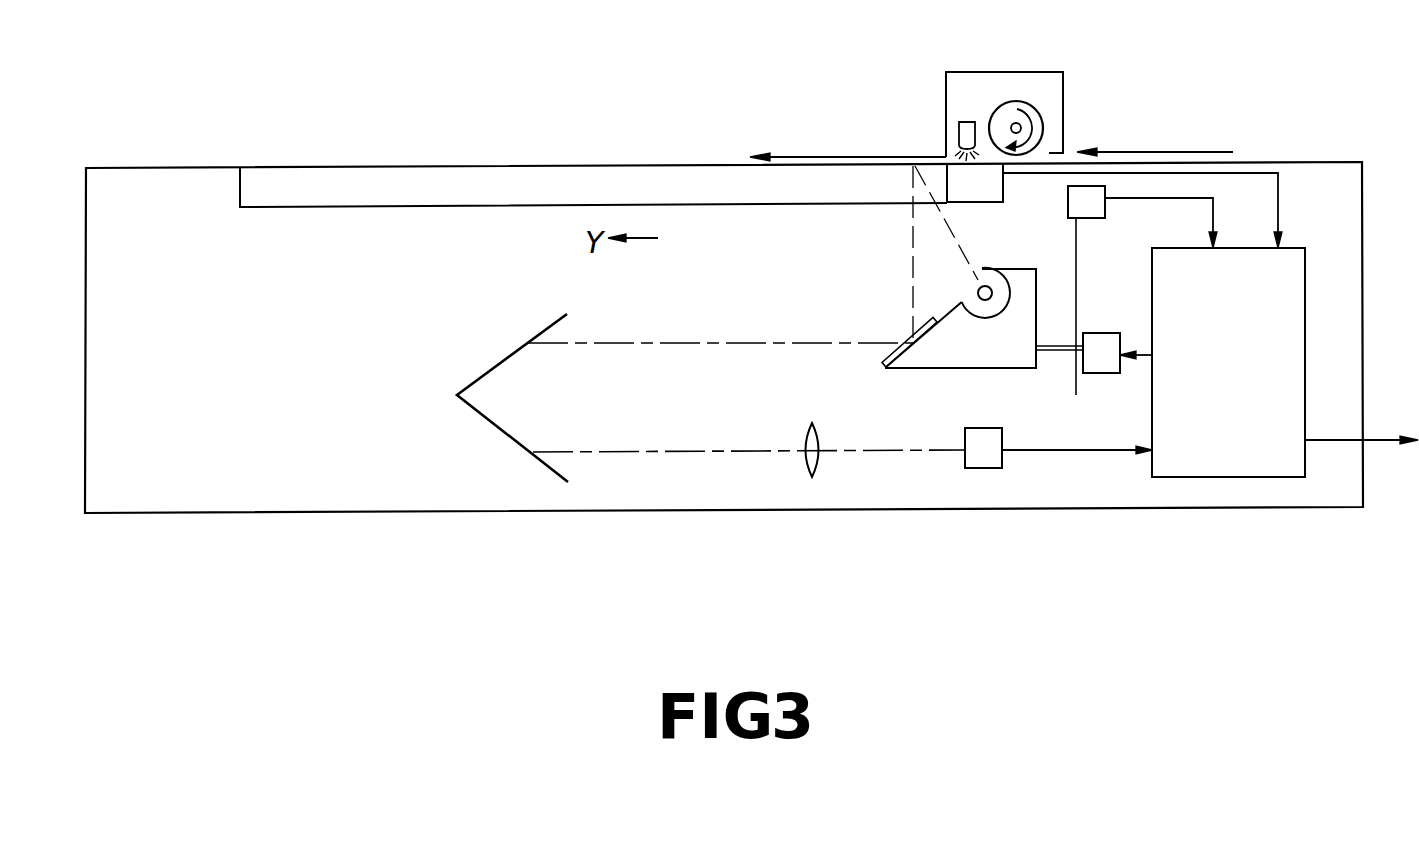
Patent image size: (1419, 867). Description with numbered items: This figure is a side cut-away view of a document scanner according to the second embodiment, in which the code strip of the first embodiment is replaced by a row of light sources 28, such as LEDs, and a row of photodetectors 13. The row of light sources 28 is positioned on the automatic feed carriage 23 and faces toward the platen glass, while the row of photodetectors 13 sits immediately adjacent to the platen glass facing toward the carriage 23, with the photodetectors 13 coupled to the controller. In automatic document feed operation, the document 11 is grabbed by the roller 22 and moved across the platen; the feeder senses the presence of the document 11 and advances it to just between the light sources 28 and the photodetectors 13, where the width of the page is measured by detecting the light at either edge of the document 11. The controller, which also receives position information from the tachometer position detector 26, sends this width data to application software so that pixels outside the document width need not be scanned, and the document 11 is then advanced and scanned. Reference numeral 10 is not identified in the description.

The control unit 10 is at (1278, 192).
The document 11 is at (773, 150).
The row of photodetectors 13 is at (963, 203).
The roller 22 is at (1043, 129).
The automatic feed carriage 23 is at (986, 72).
The tachometer position detector 26 is at (1105, 208).
The row of light sources 28 is at (957, 129).